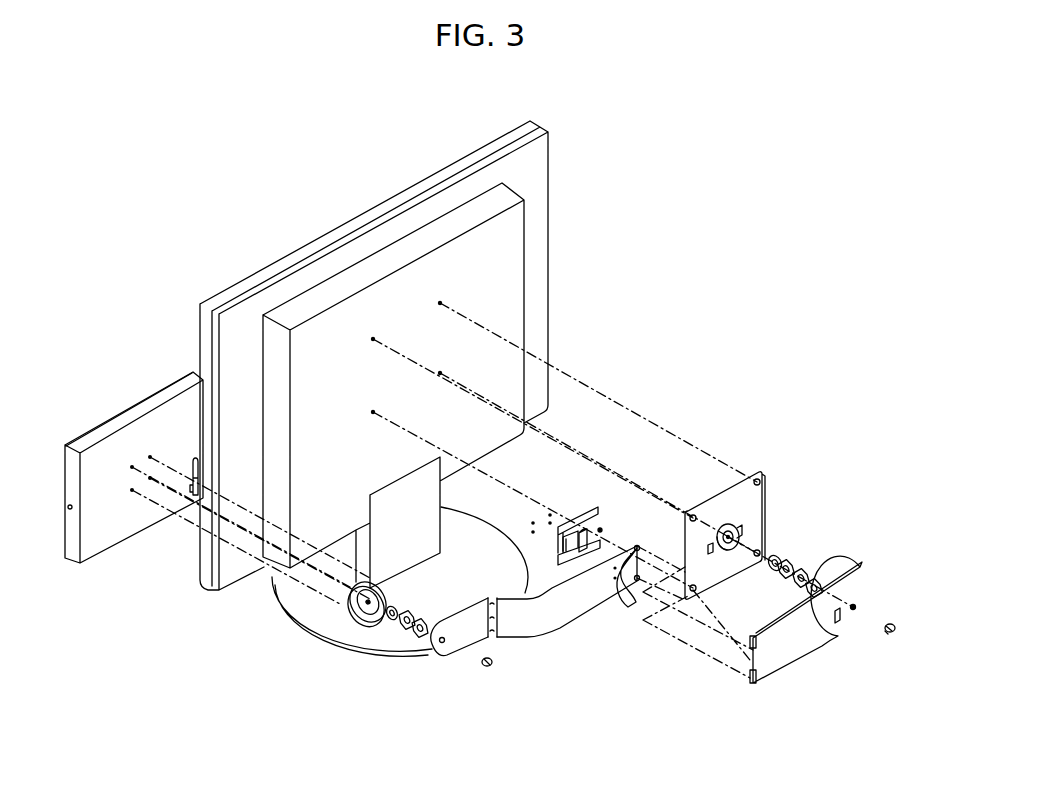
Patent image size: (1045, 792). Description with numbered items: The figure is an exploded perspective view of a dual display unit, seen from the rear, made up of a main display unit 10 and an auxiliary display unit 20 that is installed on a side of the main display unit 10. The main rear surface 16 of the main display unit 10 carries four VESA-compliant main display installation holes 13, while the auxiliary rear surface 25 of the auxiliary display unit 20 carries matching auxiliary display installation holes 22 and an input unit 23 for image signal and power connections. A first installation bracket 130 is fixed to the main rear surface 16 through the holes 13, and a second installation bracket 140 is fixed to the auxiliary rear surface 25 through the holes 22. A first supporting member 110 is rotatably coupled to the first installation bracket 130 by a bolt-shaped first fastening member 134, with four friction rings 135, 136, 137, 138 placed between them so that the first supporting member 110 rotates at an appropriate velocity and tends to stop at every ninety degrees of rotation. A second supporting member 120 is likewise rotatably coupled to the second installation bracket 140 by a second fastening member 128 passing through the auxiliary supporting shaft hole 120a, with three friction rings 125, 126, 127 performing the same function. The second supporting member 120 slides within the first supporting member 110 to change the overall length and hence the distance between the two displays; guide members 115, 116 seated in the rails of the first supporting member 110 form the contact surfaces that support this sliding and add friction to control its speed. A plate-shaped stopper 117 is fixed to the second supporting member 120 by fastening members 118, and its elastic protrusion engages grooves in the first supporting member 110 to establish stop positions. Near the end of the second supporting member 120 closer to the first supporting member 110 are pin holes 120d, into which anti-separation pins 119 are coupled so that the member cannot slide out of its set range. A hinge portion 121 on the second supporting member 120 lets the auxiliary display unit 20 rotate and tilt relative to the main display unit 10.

The main display unit 10 is at (360, 196).
The main display installation holes 13 is at (373, 411).
The main rear surface 16 is at (332, 379).
The auxiliary display unit 20 is at (114, 406).
The auxiliary display installation holes 22 is at (132, 490).
The input unit 23 is at (193, 498).
The auxiliary rear surface 25 is at (186, 437).
The first supporting member 110 is at (792, 656).
The guide member 115 is at (580, 514).
The guide member 116 is at (596, 533).
The stopper 117 is at (566, 542).
The fastening members 118 is at (533, 523).
The anti-separation pins 119 is at (601, 529).
The second supporting member 120 is at (533, 625).
The auxiliary supporting shaft hole 120a is at (438, 649).
The pin holes 120d is at (622, 586).
The hinge portion 121 is at (491, 599).
The friction ring 125 is at (418, 638).
The friction ring 126 is at (403, 630).
The friction ring 127 is at (360, 621).
The second fastening member 128 is at (491, 665).
The first installation bracket 130 is at (766, 485).
The first fastening member 134 is at (889, 634).
The friction ring 135 is at (819, 582).
The friction ring 136 is at (805, 570).
The friction ring 137 is at (790, 563).
The friction ring 138 is at (779, 557).
The second installation bracket 140 is at (348, 606).